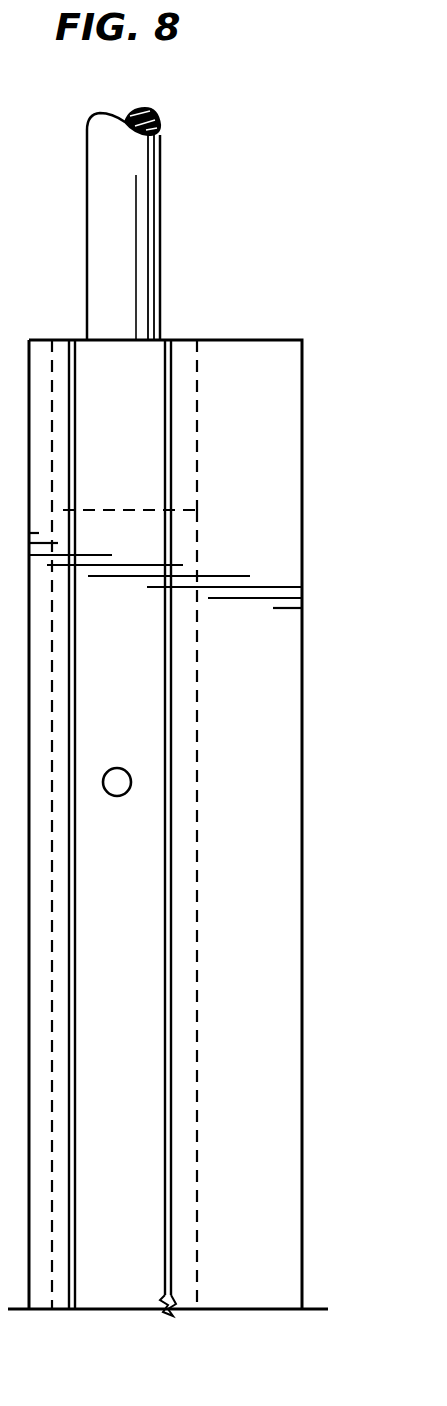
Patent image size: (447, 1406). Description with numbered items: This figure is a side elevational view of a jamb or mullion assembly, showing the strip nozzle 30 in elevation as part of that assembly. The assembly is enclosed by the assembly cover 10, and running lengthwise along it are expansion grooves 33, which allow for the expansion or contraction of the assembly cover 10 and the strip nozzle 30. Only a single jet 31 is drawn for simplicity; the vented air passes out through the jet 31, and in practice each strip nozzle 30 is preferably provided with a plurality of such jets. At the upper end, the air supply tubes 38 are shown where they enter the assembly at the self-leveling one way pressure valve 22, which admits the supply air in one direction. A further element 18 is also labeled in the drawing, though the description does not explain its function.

The assembly cover 10 is at (303, 1112).
The air supply tubes 38 is at (161, 197).
The self-leveling one way pressure valve 22 is at (191, 397).
The lower hidden channel 18 is at (198, 872).
The expansion grooves 33 is at (164, 1095).
The jets 31 is at (117, 797).
The strip nozzle 30 is at (113, 1310).